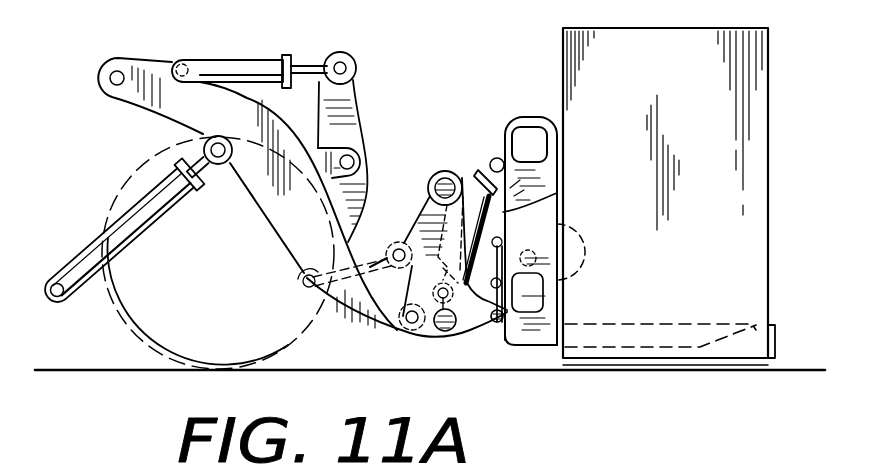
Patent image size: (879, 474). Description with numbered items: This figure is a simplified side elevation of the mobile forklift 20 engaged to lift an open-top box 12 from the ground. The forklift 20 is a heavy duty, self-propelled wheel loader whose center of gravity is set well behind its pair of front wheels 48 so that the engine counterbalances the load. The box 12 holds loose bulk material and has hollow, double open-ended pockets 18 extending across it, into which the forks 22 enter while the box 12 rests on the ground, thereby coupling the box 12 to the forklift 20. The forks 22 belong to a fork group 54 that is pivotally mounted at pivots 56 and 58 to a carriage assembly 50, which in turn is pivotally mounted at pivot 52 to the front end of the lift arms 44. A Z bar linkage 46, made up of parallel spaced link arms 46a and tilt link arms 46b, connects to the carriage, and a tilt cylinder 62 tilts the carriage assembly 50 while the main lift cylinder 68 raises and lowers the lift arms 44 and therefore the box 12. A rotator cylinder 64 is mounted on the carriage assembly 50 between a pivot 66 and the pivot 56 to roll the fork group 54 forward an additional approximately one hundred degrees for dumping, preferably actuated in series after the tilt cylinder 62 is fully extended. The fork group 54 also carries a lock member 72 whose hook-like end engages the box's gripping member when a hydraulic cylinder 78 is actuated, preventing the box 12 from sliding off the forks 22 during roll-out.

The open-top box 12 is at (769, 192).
The pocket 18 is at (776, 332).
The mobile forklift 20 is at (396, 57).
The fork 22 is at (652, 318).
The lift arm 44 is at (268, 226).
The Z bar linkage 46 is at (392, 84).
The link arm 46a is at (390, 248).
The tilt link arm 46b is at (367, 143).
The front wheel 48 is at (122, 322).
The carriage assembly 50 is at (418, 177).
The pivot 52 is at (400, 325).
The fork group 54 is at (521, 93).
The pivot 56 is at (497, 160).
The pivot 58 is at (493, 330).
The tilt cylinder 62 is at (229, 67).
The rotator cylinder 64 is at (557, 193).
The pivot 66 is at (445, 340).
The main lift cylinder 68 is at (92, 245).
The lock member 72 is at (565, 217).
The hydraulic cylinder 78 is at (440, 312).